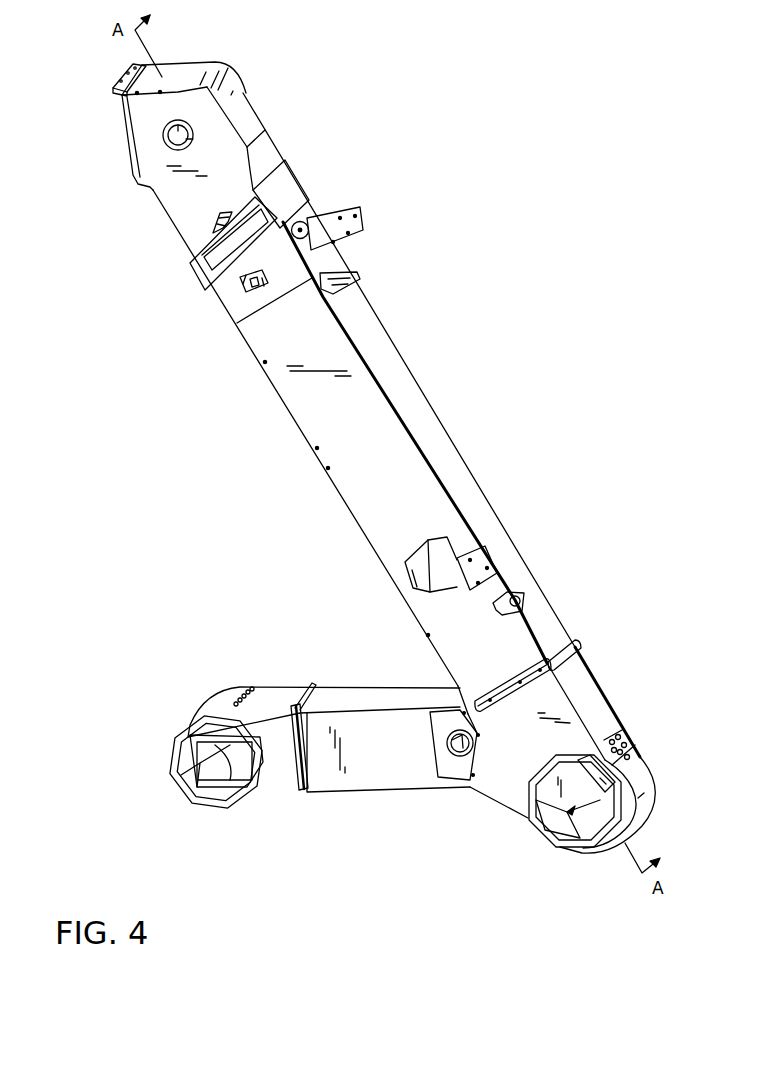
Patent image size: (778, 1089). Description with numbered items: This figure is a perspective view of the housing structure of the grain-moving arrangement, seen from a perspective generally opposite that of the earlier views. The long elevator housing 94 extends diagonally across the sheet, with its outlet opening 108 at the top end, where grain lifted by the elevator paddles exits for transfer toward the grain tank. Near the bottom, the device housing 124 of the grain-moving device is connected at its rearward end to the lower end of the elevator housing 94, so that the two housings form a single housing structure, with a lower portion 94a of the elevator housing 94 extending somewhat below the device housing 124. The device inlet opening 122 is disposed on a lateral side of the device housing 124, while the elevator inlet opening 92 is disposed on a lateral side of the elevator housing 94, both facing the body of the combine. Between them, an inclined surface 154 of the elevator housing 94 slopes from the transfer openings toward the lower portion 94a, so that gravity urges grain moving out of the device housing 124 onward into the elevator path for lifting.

The outlet opening 108 is at (110, 140).
The elevator housing 94 is at (268, 372).
The lower portion of the elevator housing 94a is at (650, 772).
The device housing 124 is at (340, 688).
The device inlet opening 122 is at (194, 765).
The inclined surface 154 is at (507, 813).
The elevator inlet opening 92 is at (543, 837).